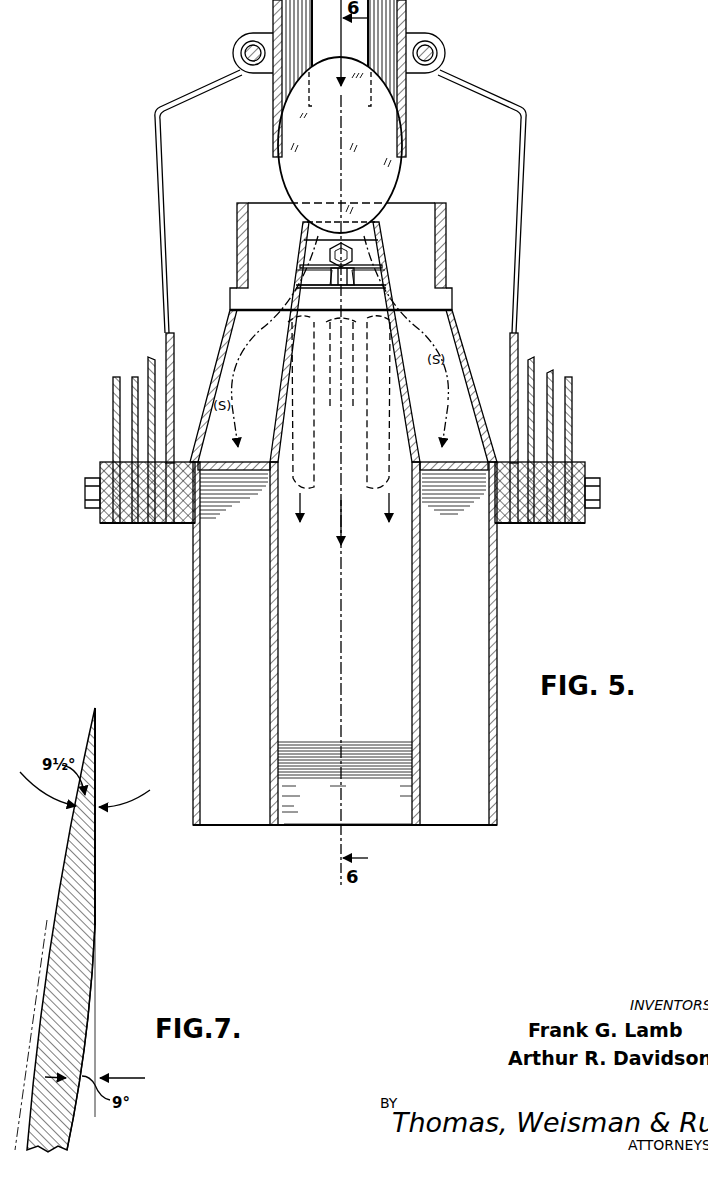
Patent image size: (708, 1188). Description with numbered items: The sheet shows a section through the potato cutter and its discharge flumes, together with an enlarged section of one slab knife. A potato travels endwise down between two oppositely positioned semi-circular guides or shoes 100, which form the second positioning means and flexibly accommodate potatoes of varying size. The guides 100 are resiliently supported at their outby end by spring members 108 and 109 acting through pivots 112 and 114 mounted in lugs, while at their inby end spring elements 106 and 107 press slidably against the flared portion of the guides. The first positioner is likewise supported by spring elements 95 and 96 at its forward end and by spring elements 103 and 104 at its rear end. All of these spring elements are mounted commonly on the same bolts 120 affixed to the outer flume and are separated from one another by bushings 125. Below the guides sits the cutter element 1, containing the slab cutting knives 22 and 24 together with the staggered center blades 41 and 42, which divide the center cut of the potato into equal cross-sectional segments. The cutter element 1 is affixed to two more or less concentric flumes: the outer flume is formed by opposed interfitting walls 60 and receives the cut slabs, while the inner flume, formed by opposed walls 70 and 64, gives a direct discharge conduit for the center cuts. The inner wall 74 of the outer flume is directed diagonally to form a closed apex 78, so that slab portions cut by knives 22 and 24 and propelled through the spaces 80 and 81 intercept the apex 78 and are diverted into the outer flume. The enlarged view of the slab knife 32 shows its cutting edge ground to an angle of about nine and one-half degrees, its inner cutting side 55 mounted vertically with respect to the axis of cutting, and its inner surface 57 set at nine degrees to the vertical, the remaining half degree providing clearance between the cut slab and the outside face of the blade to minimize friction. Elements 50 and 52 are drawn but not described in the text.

In FIG. 5, the cutter element 1 is at (446, 241).
In FIG. 5, the knife 22 is at (300, 258).
In FIG. 5, the knife 24 is at (380, 242).
In FIG. 7, the slab cutting blade 32 is at (88, 890).
In FIG. 5, the blade 41 is at (348, 305).
In FIG. 5, the blade 42 is at (341, 255).
In FIG. 5, the opening 50 is at (300, 280).
In FIG. 5, the opening 52 is at (380, 284).
In FIG. 7, the inner cutting side 55 is at (97, 762).
In FIG. 7, the inner surface 57 is at (80, 1046).
In FIG. 5, the opposed walls 60 is at (193, 606).
In FIG. 5, the opposed walls 64 is at (278, 572).
In FIG. 5, the opposed walls 70 is at (337, 692).
In FIG. 5, the inner wall 74 is at (327, 802).
In FIG. 5, the apex 78 is at (426, 460).
In FIG. 5, the space 80 is at (446, 378).
In FIG. 5, the space 81 is at (222, 344).
In FIG. 5, the spring element 95 is at (572, 418).
In FIG. 5, the spring element 96 is at (113, 411).
In FIG. 5, the guide or shoe 100 is at (404, 26).
In FIG. 5, the spring element 103 is at (550, 374).
In FIG. 5, the spring element 104 is at (133, 378).
In FIG. 5, the spring element 106 is at (532, 358).
In FIG. 5, the spring element 107 is at (151, 358).
In FIG. 5, the spring member 108 is at (161, 203).
In FIG. 5, the spring member 109 is at (521, 211).
In FIG. 5, the pivot 112 is at (252, 40).
In FIG. 5, the pivot 114 is at (440, 57).
In FIG. 5, the bolt 120 is at (596, 484).
In FIG. 5, the bushing 125 is at (586, 512).